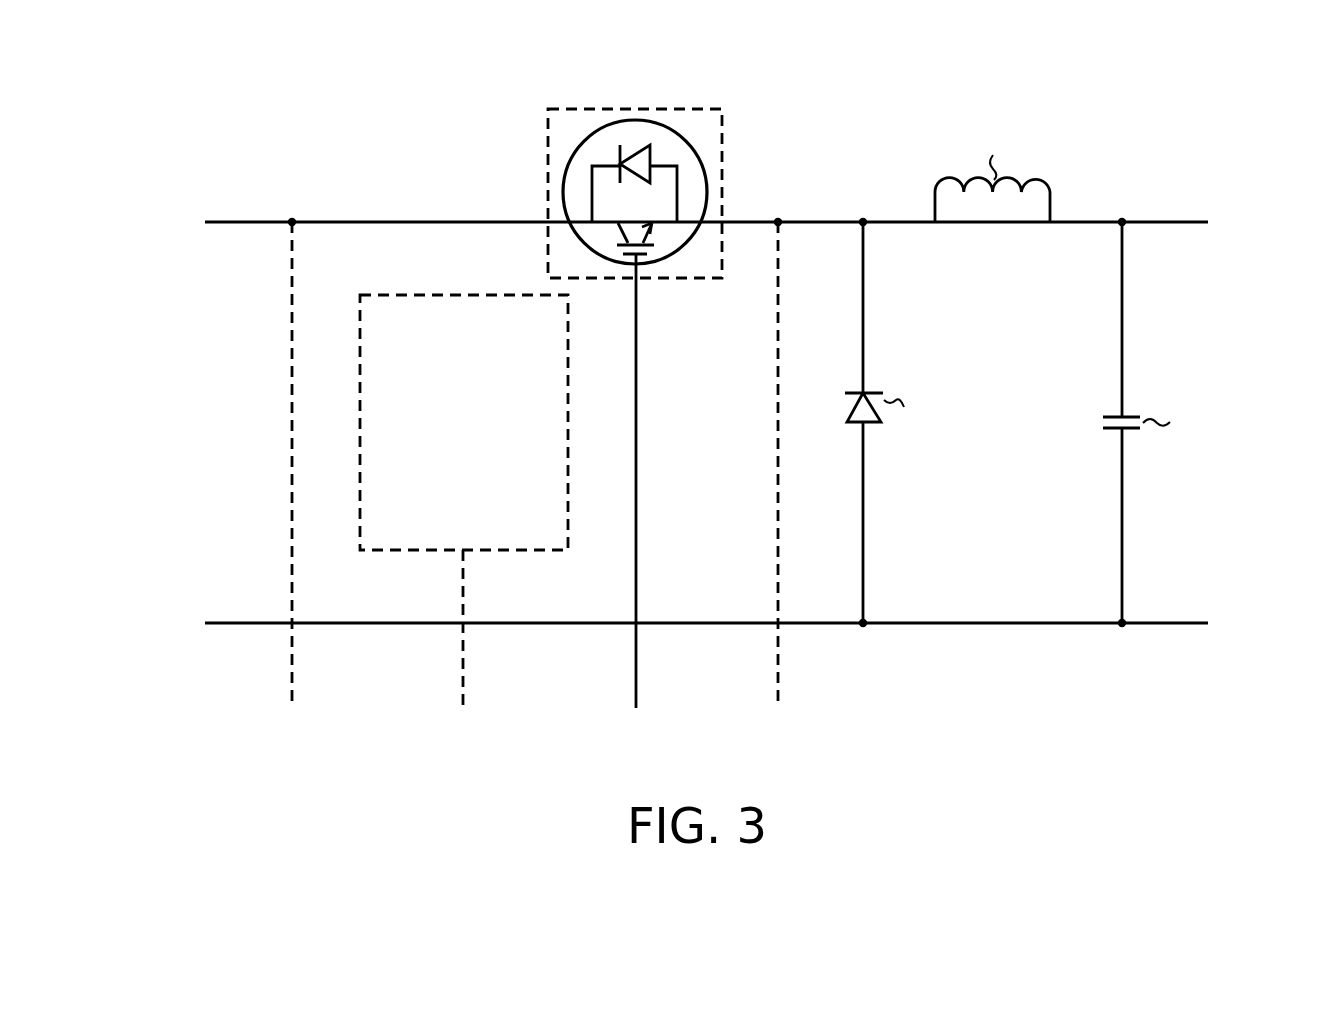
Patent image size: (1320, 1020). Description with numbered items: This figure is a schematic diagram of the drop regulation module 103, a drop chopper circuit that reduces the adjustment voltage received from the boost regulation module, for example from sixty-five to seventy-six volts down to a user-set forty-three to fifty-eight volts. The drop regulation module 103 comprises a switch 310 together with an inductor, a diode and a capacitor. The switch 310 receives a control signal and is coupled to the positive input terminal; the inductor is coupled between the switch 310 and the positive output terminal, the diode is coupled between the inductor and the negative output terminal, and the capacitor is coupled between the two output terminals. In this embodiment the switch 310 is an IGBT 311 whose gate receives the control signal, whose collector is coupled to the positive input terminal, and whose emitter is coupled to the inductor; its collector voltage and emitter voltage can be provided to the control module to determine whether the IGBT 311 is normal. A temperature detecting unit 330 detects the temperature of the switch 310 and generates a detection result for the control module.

The drop regulation module 103 is at (1178, 137).
The switch 310 is at (596, 108).
The IGBT 311 is at (666, 119).
The temperature detecting unit 330 is at (486, 492).